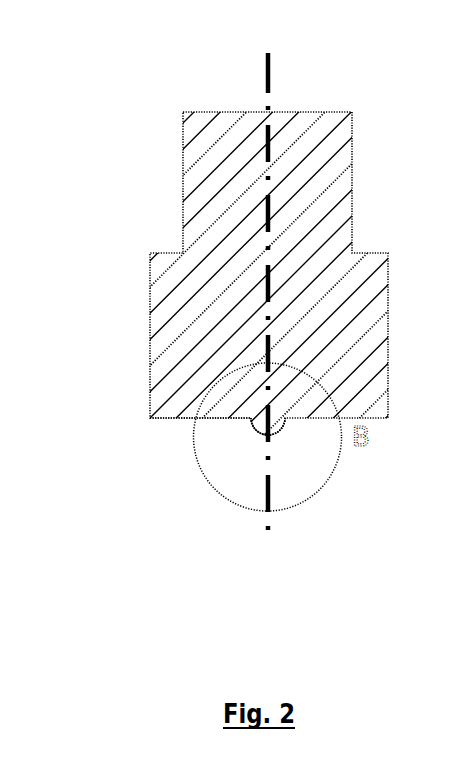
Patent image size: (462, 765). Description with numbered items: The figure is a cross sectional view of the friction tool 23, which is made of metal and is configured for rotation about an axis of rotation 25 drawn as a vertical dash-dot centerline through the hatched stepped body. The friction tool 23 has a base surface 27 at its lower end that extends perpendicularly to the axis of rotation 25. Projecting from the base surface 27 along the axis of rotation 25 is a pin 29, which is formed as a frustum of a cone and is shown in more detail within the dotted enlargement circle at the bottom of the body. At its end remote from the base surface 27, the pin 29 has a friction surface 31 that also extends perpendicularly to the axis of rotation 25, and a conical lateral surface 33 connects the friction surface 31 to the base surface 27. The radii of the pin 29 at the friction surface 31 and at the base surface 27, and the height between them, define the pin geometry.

The friction tool 23 is at (310, 180).
The axis of rotation 25 is at (268, 74).
The base surface 27 is at (178, 418).
The pin 29 is at (278, 427).
The friction surface 31 is at (277, 438).
The conical lateral surface 33 is at (253, 423).